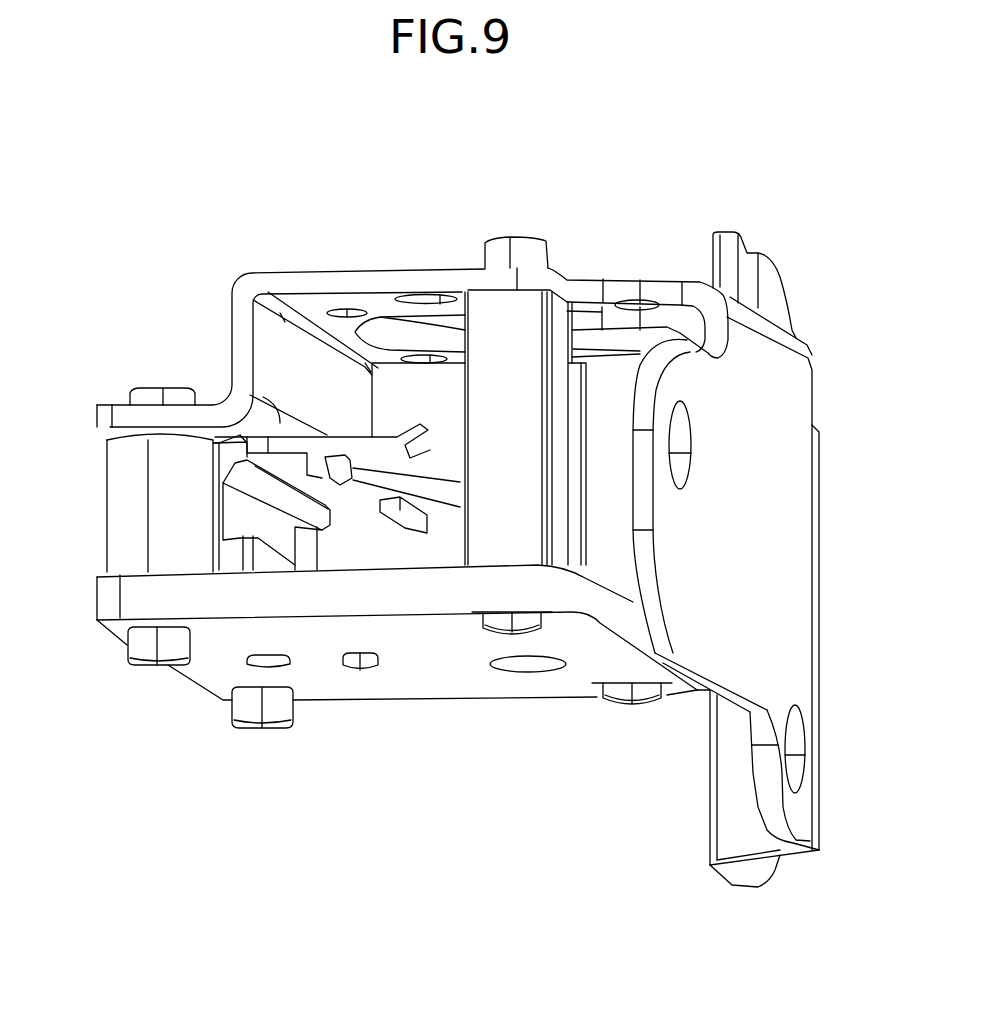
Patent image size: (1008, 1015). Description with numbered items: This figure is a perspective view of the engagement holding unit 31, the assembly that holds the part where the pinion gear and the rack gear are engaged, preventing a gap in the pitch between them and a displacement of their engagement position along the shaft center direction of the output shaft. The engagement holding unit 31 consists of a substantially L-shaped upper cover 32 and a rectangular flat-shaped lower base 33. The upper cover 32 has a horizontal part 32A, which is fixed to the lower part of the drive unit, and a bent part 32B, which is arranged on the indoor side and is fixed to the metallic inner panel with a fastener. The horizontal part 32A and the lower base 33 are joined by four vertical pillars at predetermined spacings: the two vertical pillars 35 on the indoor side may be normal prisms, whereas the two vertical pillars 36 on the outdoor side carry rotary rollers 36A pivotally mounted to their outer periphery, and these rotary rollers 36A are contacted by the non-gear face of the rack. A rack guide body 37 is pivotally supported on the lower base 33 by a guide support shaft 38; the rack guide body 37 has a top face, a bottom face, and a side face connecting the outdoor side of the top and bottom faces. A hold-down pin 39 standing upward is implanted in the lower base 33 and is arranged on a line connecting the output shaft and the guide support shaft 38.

The engagement holding unit 31 is at (192, 283).
The upper cover 32 is at (787, 390).
The horizontal part 32A is at (298, 272).
The bent part 32B is at (792, 593).
The lower base 33 is at (312, 688).
The vertical pillars 35 is at (505, 527).
The vertical pillars 36 is at (125, 498).
The rotary rollers 36A is at (117, 535).
The rack guide body 37 is at (252, 517).
The guide support shaft 38 is at (257, 663).
The hold-down pin 39 is at (363, 670).